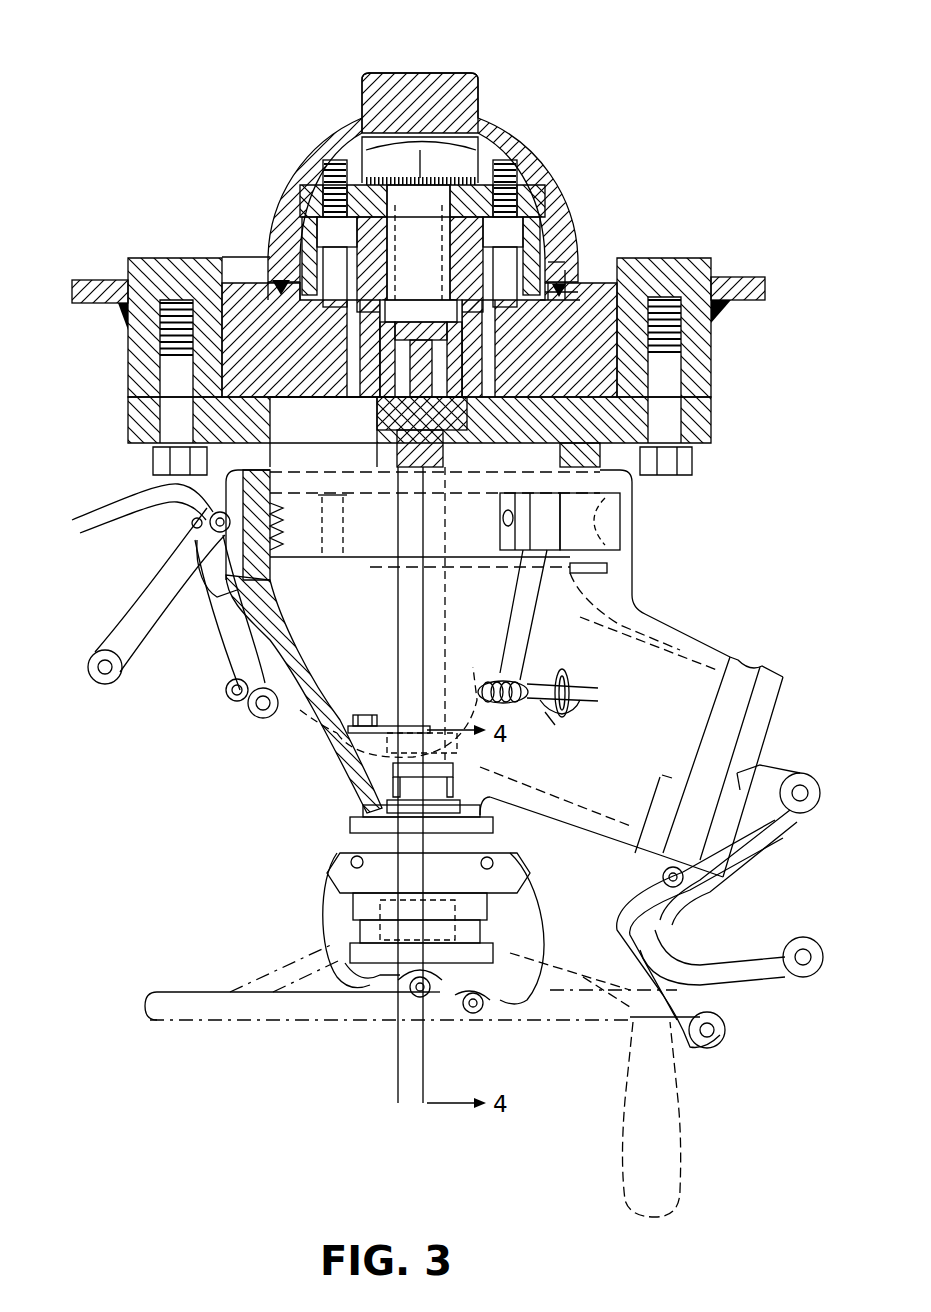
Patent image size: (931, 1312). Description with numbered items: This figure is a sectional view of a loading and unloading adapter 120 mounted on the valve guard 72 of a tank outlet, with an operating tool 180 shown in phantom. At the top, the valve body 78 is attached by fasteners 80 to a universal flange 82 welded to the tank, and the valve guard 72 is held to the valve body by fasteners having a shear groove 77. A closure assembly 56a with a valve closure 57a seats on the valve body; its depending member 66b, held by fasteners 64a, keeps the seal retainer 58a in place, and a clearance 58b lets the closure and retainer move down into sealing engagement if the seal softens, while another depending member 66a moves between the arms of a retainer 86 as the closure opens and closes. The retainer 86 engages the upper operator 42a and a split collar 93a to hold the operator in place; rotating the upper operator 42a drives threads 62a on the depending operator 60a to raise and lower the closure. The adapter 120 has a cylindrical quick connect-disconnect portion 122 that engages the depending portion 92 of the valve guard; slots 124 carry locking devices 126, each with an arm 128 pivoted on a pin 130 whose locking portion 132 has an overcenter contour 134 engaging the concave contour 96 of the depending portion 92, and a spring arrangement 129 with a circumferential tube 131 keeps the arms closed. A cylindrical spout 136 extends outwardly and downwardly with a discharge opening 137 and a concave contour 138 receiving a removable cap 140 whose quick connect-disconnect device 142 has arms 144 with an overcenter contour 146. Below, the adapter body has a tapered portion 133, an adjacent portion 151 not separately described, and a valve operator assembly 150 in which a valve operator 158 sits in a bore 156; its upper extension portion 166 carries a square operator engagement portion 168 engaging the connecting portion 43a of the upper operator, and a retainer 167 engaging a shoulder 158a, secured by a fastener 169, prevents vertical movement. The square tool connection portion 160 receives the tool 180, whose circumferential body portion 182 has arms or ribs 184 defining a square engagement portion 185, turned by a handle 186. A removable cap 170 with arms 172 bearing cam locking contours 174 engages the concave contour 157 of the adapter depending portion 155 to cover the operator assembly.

The closure assembly 56a is at (482, 55).
The valve closure 57a is at (412, 122).
The fasteners 64a is at (497, 190).
The depending member 66a is at (530, 265).
The clearance 58b is at (553, 265).
The seal retainer 58a is at (565, 283).
The valve closure depending member 66b is at (575, 292).
The universal flange 82 is at (688, 272).
The fasteners 80 is at (660, 333).
The valve body 78 is at (690, 370).
The shear groove 77 is at (170, 402).
The retainer 86 is at (288, 403).
The overcenter contour 134 is at (228, 538).
The upper operator 42a is at (383, 340).
The operator engagement portion 168 is at (463, 412).
The upper extension portion 166 is at (443, 446).
The valve guard 72 is at (580, 436).
The depending operator 60a is at (437, 246).
The threads 62a is at (450, 297).
The recess 93a is at (478, 310).
The spool 43a is at (455, 352).
The slots 124 is at (186, 482).
The concave contour 96 is at (615, 500).
The quick connect-disconnect portion 122 is at (630, 528).
The adapter 120 is at (692, 567).
The pin 130 is at (200, 523).
The quick connect-disconnect locking devices 126 is at (122, 595).
The locking portion 132 is at (217, 532).
The arm 128 is at (132, 620).
The depending portion 92 is at (260, 540).
The valve operator 158 is at (410, 625).
The shoulder 158a is at (427, 717).
The bore 156 is at (470, 710).
The loading and unloading spout 136 is at (660, 627).
The discharge opening 137 is at (680, 670).
The concave contour 138 is at (747, 667).
The fastener 169 is at (353, 717).
The retainer 167 is at (393, 727).
The tapered portion 133 is at (513, 715).
The circumferential tube 131 is at (293, 700).
The spring arrangement 129 is at (245, 758).
The removable cap 140 is at (757, 787).
The valve operator assembly 150 is at (246, 799).
The wall 151 is at (333, 773).
The adapter depending portion 155 is at (360, 807).
The cam locking contours 174 is at (480, 860).
The concave contour 157 is at (340, 870).
The arms 172 is at (533, 910).
The engagement portion 185 is at (457, 933).
The arms or ribs 184 is at (570, 972).
The quick connect-disconnect device 142 is at (782, 871).
The arms 144 is at (763, 895).
The overcenter contour 146 is at (713, 923).
The removable cap 170 is at (338, 990).
The circumferential body portion 182 is at (402, 1010).
The tool connection portion 160 is at (450, 1000).
The operating tool 180 is at (569, 1030).
The handle 186 is at (660, 1103).